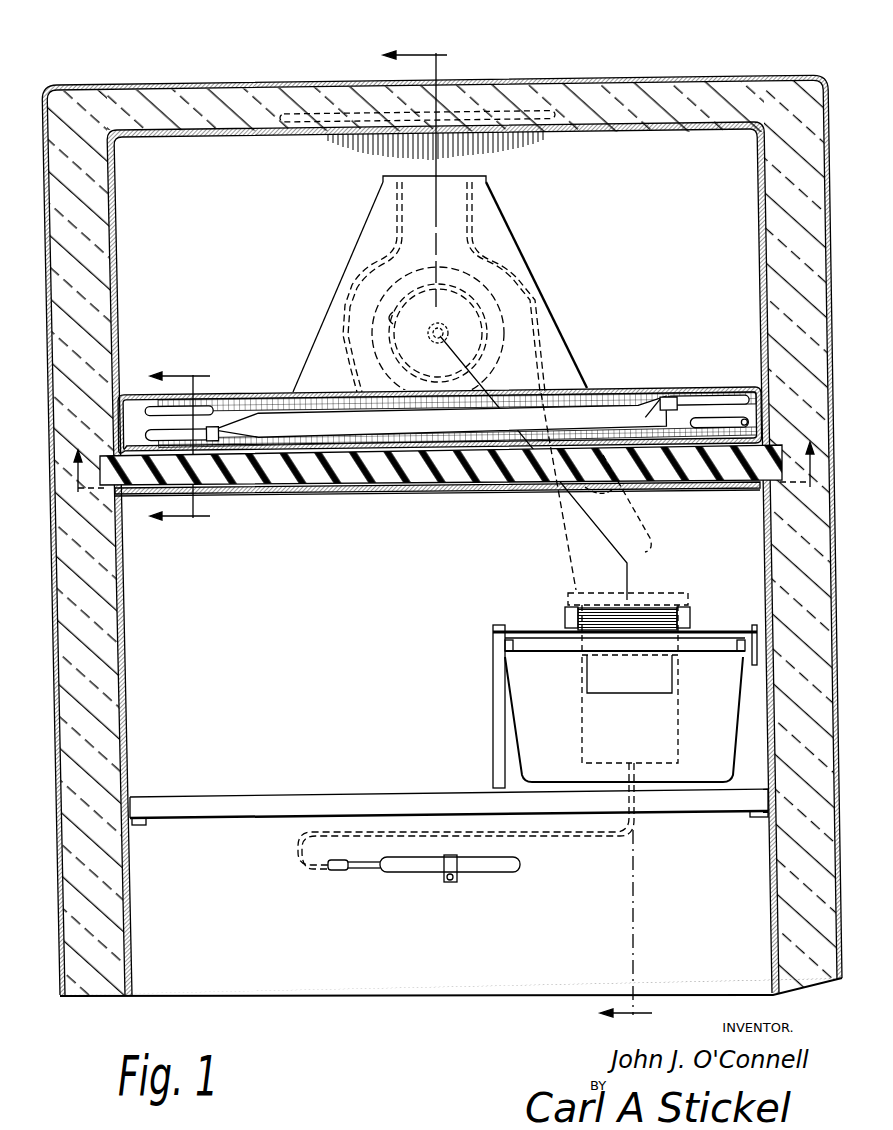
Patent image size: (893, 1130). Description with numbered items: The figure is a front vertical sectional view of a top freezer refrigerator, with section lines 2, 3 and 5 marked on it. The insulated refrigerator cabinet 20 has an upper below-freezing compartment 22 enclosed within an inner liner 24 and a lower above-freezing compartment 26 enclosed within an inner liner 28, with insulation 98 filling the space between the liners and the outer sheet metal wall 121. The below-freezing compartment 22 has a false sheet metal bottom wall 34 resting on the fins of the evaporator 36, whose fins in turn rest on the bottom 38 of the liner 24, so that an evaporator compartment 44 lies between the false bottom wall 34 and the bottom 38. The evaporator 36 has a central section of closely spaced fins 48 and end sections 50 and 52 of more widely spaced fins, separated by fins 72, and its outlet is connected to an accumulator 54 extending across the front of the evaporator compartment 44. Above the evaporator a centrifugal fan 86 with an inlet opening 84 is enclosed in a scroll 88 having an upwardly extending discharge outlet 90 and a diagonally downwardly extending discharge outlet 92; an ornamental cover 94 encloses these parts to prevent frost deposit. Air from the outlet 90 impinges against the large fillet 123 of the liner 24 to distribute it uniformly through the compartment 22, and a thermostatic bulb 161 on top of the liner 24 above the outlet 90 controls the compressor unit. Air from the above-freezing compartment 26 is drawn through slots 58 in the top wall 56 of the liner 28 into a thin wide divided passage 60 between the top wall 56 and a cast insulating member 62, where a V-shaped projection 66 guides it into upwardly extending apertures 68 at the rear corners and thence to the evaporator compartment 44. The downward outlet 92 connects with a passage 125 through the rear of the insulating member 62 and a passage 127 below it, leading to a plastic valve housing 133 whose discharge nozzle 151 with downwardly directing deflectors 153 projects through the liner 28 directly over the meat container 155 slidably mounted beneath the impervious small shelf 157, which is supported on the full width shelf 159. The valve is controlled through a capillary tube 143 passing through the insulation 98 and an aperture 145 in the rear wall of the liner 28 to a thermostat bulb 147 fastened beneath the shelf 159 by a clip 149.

The insulated refrigerator cabinet 20 is at (655, 84).
The insulation 98 is at (777, 95).
The below-freezing compartment 22 is at (629, 215).
The inner liner 24 is at (760, 225).
The thermostatic bulb 161 is at (332, 116).
The large fillet 123 is at (425, 147).
The upwardly extending discharge outlet 90 is at (470, 193).
The ornamental cover 94 is at (507, 222).
The scroll 88 is at (365, 265).
The inlet opening 84 is at (392, 318).
The centrifugal fan 86 is at (490, 300).
The diagonally downwardly extending discharge outlet 92 is at (565, 398).
The fins 72 is at (245, 398).
The false sheet metal bottom wall 34 is at (675, 400).
The end section of widely spaced fins 52 is at (700, 420).
The evaporator compartment 44 is at (132, 420).
The end section of widely spaced fins 50 is at (216, 405).
The evaporator 36 is at (269, 356).
The cast insulating member 62 is at (128, 496).
The slots 58 is at (218, 496).
The upwardly extending apertures 68 is at (242, 488).
The top wall 56 is at (272, 496).
The accumulator 54 is at (302, 432).
The bottom 38 is at (358, 458).
The thin wide divided passage 60 is at (396, 496).
The V-shaped projection 66 is at (475, 494).
The central closely spaced fins 48 is at (484, 462).
The passage 125 is at (612, 492).
The passage 127 is at (660, 546).
The deflectors 153 is at (590, 615).
The discharge nozzle 151 is at (692, 615).
The impervious small shelf 157 is at (530, 632).
The meat container 155 is at (512, 705).
The plastic valve housing 133 is at (678, 668).
The inner liner 28 is at (163, 692).
The above-freezing compartment 26 is at (354, 685).
The full width shelf 159 is at (288, 803).
The aperture 145 is at (338, 872).
The capillary tube 143 is at (368, 872).
The thermostat bulb 147 is at (497, 866).
The clip 149 is at (450, 882).
The outer sheet metal wall 121 is at (842, 978).
The section line 2- 2 is at (517, 527).
The section line 3- 3 is at (439, 449).
The section line 5- 5 is at (180, 445).